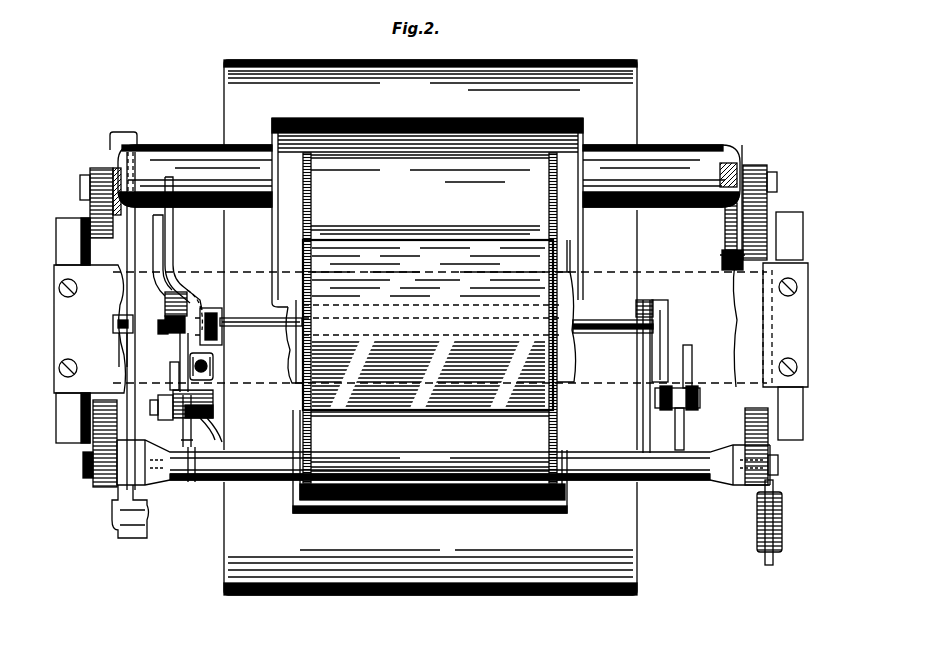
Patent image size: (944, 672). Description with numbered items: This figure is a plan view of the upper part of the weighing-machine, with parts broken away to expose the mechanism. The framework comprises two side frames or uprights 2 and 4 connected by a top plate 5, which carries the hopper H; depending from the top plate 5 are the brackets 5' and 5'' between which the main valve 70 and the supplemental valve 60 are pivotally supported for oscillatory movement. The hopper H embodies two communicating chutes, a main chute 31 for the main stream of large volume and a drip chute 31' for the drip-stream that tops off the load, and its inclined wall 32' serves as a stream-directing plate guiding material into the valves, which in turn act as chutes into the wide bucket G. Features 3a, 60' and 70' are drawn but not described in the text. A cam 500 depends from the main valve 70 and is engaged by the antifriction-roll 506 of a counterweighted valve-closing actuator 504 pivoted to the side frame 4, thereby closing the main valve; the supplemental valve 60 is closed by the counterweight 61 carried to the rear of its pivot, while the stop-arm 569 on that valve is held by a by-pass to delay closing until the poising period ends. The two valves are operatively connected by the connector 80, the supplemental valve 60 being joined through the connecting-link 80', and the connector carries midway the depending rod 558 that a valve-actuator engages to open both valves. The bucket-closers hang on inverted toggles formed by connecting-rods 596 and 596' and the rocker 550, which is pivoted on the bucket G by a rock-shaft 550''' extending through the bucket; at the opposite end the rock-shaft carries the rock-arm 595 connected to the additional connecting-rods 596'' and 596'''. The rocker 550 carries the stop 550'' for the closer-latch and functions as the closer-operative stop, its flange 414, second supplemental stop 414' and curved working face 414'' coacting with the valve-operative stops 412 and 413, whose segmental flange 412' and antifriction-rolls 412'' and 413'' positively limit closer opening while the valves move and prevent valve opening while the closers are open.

The side frame 2 is at (77, 428).
The side frame 4 is at (793, 433).
The top plate 5 is at (129, 321).
The bracket 5' is at (426, 212).
The bracket 5'' is at (440, 453).
The main chute 31 is at (430, 318).
The drip chute 31' is at (432, 456).
The hopper wall 32' is at (572, 315).
The drum body 3a is at (530, 262).
The supplemental valve 60 is at (416, 461).
The drum lower body 60' is at (428, 397).
The counterweight 61 is at (488, 513).
The main valve 70 is at (414, 212).
The drum axis lines 70' is at (431, 301).
The connector 80 is at (157, 409).
The connecting-link 80' is at (147, 511).
The valve-operative stop 412 is at (187, 243).
The segmental flange 412' is at (194, 305).
The antifriction-roll 412'' is at (116, 321).
The valve-operative stop 413 is at (217, 407).
The antifriction-roll 413'' is at (230, 379).
The flange 414 is at (163, 362).
The second supplemental stop 414' is at (236, 433).
The curved working face 414'' is at (178, 474).
The cam 500 is at (732, 222).
The valve-closing actuator 504 is at (763, 365).
The antifriction-roll 506 is at (723, 175).
The rocker 550 is at (228, 319).
The stop 550'' is at (183, 255).
The rock-shaft 550''' is at (261, 337).
The rod 558 is at (125, 347).
The stop-arm 569 is at (647, 422).
The rock-arm 595 is at (663, 345).
The connecting-rod 596 is at (167, 421).
The connecting-rod 596' is at (158, 373).
The connecting-rod 596'' is at (704, 429).
The connecting-rod 596''' is at (710, 366).
The bucket G is at (430, 327).
The hopper H is at (302, 362).